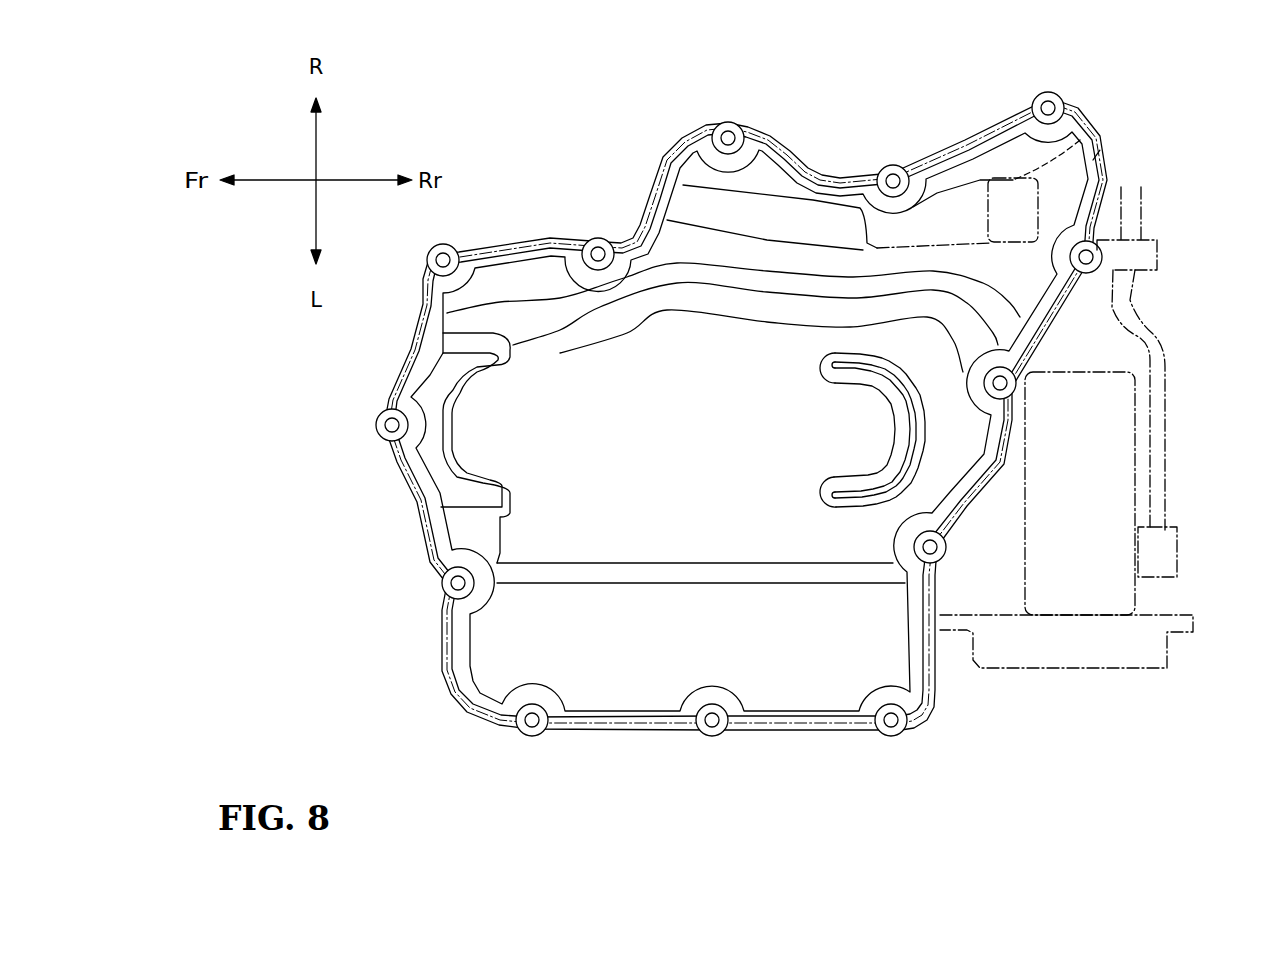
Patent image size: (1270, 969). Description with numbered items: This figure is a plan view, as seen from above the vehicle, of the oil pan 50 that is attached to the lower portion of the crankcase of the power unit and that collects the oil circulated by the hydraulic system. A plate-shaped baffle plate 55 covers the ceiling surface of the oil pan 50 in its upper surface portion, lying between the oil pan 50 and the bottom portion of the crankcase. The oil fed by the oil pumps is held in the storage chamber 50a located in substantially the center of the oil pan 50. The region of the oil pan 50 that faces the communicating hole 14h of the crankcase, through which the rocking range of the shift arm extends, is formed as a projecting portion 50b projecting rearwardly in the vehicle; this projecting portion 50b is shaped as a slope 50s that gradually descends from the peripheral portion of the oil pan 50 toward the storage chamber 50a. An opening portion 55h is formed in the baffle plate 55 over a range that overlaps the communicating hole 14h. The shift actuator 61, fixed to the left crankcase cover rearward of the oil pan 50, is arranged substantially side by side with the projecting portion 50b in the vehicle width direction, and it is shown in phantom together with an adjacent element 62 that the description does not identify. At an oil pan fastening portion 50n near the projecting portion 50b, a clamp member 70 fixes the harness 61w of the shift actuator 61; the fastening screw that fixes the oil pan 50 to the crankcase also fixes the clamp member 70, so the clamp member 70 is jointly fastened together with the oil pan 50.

The oil pan 50 is at (810, 419).
The storage chamber 50a is at (675, 495).
The projecting portion 50b is at (1007, 122).
The slope 50s is at (977, 257).
The oil pan fastening portion 50n is at (727, 136).
The baffle plate 55 is at (798, 150).
The opening portion 55h is at (1098, 130).
The communicating hole 14h is at (1097, 160).
The clamp member 70 is at (1143, 233).
The shift actuator 61 is at (1013, 520).
The harness 61w is at (1127, 288).
The bracket 62 is at (1042, 662).